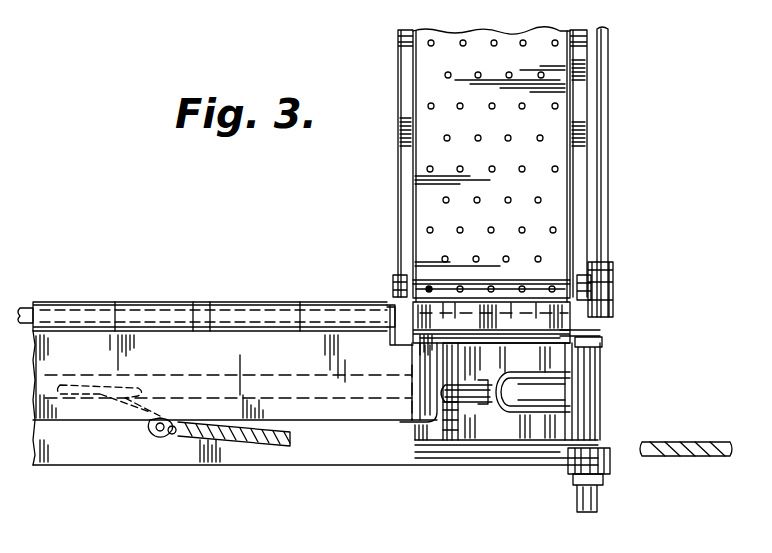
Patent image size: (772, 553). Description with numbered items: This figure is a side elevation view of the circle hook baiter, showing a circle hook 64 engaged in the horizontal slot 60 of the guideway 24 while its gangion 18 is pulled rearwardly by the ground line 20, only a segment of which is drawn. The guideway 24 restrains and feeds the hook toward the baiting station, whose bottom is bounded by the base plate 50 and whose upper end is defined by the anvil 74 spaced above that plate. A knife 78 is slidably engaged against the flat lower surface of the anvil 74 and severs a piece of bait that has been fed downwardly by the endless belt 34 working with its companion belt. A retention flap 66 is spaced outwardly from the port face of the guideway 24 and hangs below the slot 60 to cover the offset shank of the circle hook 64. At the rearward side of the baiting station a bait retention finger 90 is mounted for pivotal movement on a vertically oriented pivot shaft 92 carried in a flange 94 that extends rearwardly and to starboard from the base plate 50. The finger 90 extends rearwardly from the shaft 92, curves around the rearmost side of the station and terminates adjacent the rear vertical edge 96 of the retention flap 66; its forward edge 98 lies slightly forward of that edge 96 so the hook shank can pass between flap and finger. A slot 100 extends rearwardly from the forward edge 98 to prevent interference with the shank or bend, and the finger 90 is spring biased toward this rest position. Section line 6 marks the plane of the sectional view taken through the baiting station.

The section line 6- 6 is at (193, 333).
The gangion 18 is at (267, 443).
The ground line 20 is at (660, 445).
The guideway 24 is at (158, 290).
The endless belt 34 is at (430, 212).
The base plate 50 is at (556, 452).
The slot 60 is at (280, 393).
The circle hook 64 is at (120, 422).
The retention flap 66 is at (90, 364).
The anvil 74 is at (413, 317).
The knife 78 is at (567, 338).
The bait retention finger 90 is at (505, 427).
The pivot shaft 92 is at (603, 487).
The flange 94 is at (608, 462).
The rear vertical edge 96 is at (462, 408).
The forward edge 98 is at (443, 428).
The slot 100 is at (487, 404).